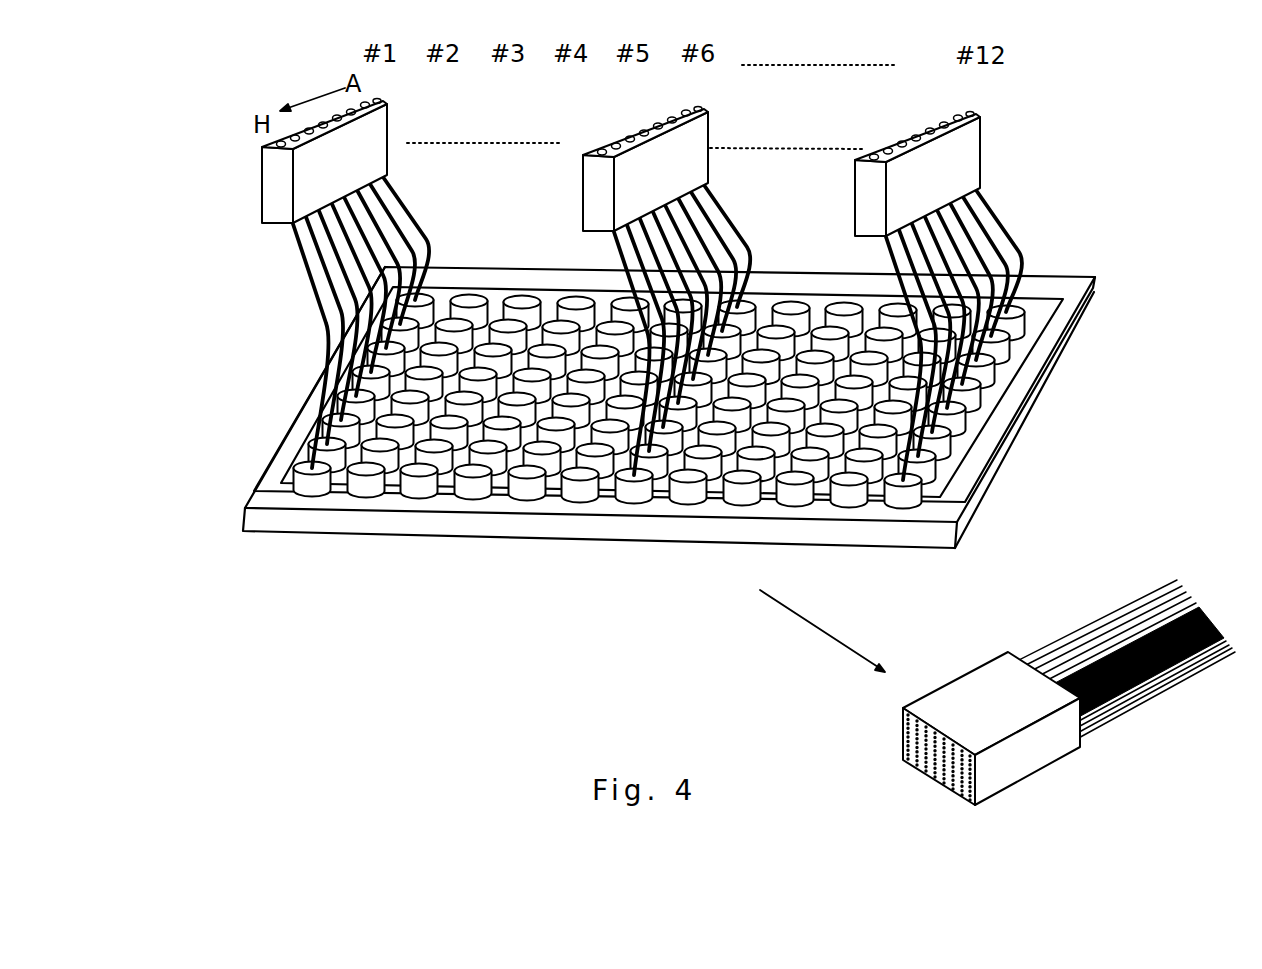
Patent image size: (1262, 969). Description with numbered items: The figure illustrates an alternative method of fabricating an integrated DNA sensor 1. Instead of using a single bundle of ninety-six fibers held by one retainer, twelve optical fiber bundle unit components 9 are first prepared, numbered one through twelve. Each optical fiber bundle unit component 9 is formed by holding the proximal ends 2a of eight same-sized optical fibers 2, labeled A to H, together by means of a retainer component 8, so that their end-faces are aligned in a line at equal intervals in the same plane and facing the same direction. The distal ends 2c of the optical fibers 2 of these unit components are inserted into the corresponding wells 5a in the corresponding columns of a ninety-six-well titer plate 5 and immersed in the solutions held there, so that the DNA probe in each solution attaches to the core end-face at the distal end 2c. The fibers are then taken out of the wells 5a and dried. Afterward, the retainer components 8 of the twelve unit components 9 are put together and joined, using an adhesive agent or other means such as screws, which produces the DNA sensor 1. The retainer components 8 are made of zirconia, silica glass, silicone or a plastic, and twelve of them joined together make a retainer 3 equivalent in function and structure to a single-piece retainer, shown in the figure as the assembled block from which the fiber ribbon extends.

The DNA sensor 1 is at (1031, 652).
The optical fibers 2 is at (1031, 647).
The proximal ends 2a is at (903, 724).
The distal ends 2c is at (1176, 580).
The retainer 3 is at (953, 705).
The 96-well titer plate 5 is at (1048, 371).
The wells 5a is at (659, 441).
The retainer component 8 is at (596, 174).
The optical fiber bundle unit component 9 is at (631, 281).